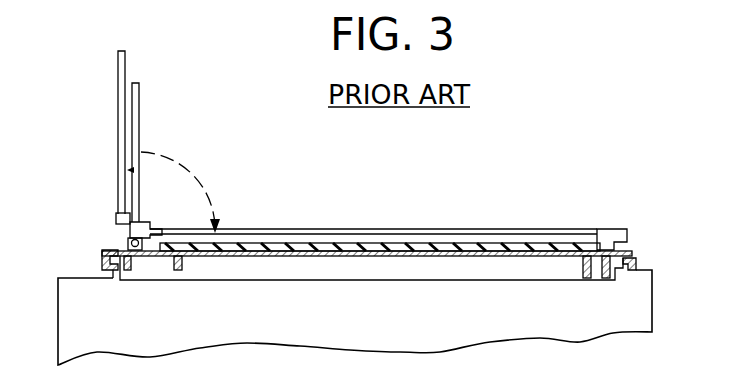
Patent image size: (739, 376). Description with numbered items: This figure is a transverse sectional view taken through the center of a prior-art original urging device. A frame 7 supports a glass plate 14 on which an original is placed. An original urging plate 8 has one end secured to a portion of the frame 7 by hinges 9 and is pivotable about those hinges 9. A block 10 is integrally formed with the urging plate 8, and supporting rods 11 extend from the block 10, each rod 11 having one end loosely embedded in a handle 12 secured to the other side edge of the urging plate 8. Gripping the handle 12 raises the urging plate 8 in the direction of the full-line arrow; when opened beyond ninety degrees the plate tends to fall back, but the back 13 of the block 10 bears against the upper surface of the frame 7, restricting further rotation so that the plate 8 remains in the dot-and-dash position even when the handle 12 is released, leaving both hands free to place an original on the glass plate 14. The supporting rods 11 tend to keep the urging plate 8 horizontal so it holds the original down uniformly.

The frame 7 is at (103, 258).
The original urging plate 8 is at (450, 244).
The hinges 9 is at (131, 242).
The block 10 is at (143, 222).
The supporting rods 11 is at (334, 229).
The handle 12 is at (607, 231).
The back of the block 13 is at (120, 222).
The glass plate 14 is at (434, 257).